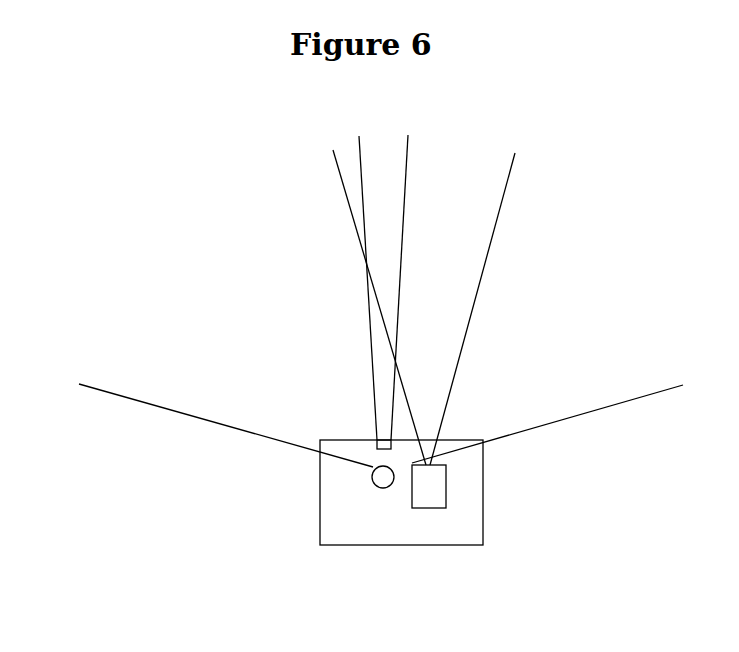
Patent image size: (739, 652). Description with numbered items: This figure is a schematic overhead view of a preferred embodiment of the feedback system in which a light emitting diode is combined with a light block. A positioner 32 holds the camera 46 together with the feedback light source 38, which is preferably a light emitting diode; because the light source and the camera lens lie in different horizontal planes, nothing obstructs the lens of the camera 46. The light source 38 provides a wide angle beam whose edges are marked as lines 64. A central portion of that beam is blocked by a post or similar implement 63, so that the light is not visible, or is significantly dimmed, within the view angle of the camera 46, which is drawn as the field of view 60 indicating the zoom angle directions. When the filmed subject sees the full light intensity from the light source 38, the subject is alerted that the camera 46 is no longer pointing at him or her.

The positioner 32 is at (484, 500).
The light source 38 is at (374, 484).
The camera 46 is at (428, 508).
The field of view 60 is at (343, 190).
The post 63 is at (372, 443).
The light beam edges 64 is at (405, 210).